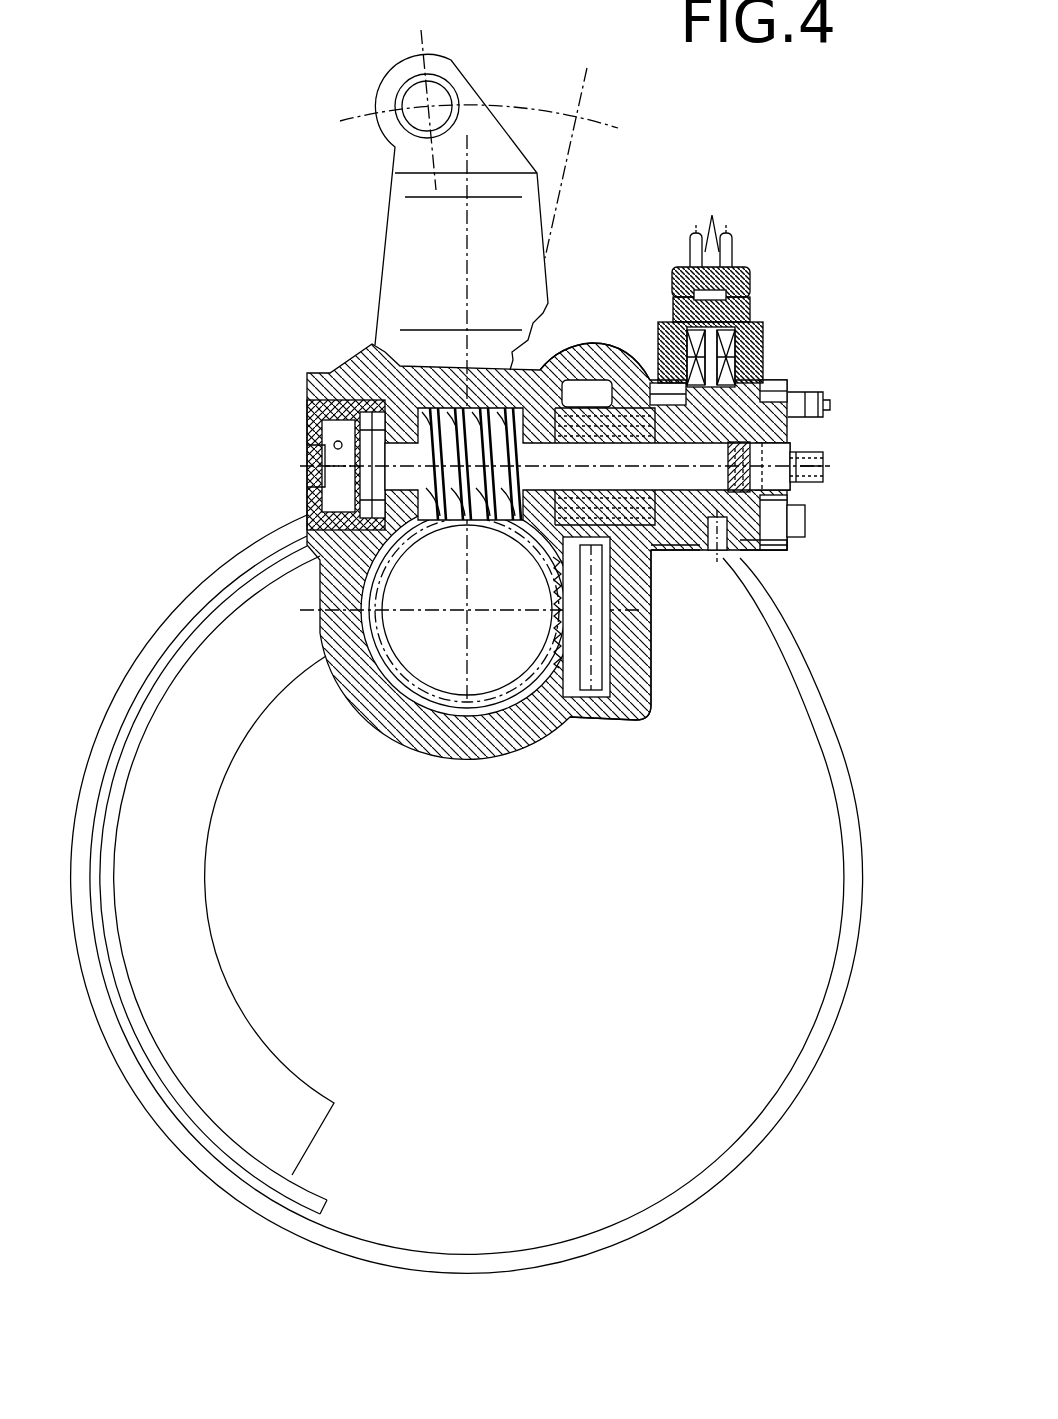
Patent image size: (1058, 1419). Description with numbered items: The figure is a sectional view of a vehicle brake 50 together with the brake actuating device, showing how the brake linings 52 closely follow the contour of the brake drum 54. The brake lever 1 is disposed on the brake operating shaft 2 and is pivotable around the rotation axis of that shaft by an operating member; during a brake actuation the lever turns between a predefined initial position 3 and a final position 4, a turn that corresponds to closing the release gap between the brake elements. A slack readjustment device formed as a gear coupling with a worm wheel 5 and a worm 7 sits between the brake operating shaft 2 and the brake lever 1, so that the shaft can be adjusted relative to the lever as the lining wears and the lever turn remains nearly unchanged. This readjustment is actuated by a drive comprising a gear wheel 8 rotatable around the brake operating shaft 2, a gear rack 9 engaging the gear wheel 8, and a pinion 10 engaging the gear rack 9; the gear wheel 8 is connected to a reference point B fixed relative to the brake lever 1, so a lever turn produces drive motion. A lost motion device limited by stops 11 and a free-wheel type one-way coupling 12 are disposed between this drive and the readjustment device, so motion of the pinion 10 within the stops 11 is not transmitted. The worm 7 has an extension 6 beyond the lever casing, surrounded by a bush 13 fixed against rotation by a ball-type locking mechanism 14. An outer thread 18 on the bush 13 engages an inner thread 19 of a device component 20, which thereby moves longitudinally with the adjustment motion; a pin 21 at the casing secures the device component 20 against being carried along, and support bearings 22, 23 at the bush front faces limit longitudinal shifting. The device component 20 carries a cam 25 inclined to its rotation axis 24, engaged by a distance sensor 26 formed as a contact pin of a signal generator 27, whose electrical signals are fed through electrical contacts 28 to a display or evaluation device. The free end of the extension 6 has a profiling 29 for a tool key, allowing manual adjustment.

The brake lever 1 is at (408, 225).
The brake operating shaft 2 is at (466, 613).
The initial position 3 is at (429, 106).
The final position 4 is at (577, 118).
The worm wheel 5 is at (390, 652).
The extension 6 is at (640, 400).
The worm 7 is at (345, 378).
The gear wheel 8 is at (512, 650).
The gear rack 9 is at (632, 718).
The pinion 10 is at (580, 407).
The stops 11 is at (660, 553).
The one-way coupling 12 is at (596, 417).
The bush 13 is at (680, 553).
The locking mechanism 14 is at (787, 512).
The outer thread 18 is at (783, 548).
The inner thread 19 is at (750, 557).
The device component 20 is at (803, 390).
The pin 21 is at (738, 555).
The support bearing 22 is at (800, 520).
The support bearing 23 is at (653, 377).
The rotation axis 24 is at (798, 482).
The cam 25 is at (780, 380).
The distance sensor 26 is at (763, 357).
The signal generator 27 is at (763, 322).
The electrical contacts 28 is at (712, 200).
The profiling 29 is at (824, 456).
The brake 50 is at (190, 535).
The brake linings 52 is at (307, 1125).
The brake drum 54 is at (805, 1085).
The reference point B is at (493, 643).